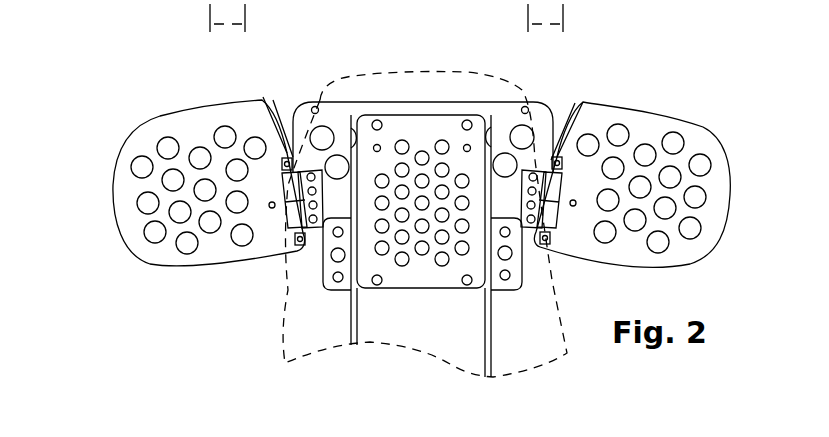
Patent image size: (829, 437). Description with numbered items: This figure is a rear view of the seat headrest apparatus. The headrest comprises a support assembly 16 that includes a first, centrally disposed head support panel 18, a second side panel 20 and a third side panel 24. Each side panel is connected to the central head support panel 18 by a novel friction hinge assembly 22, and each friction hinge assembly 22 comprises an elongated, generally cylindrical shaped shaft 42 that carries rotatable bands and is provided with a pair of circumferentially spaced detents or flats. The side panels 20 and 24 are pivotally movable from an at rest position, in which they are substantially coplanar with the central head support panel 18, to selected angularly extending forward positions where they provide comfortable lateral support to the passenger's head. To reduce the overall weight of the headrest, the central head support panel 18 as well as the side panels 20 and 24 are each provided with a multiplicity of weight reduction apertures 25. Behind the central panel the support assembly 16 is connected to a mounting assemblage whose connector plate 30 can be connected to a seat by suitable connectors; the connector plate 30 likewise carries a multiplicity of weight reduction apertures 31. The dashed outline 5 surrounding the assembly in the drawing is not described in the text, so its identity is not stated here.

The shell outline 5 is at (330, 88).
The support assembly 16 is at (541, 90).
The head support panel 18 is at (335, 110).
The second side panel 20 is at (640, 120).
The friction hinge assembly 22 is at (282, 218).
The third side panel 24 is at (205, 118).
The weight reduction apertures 25 is at (147, 198).
The connector plate 30 is at (421, 226).
The weight reduction apertures 31 is at (442, 140).
The shaft 42 is at (268, 103).